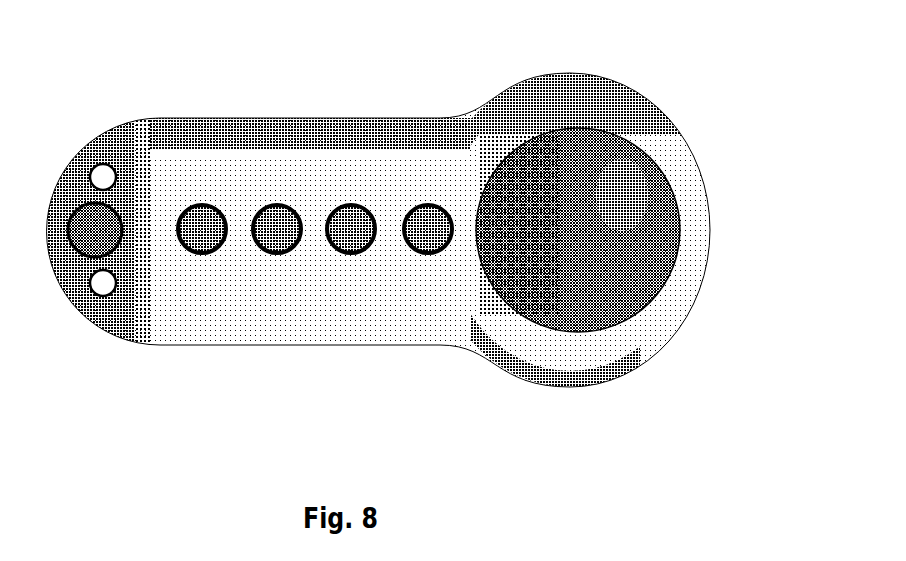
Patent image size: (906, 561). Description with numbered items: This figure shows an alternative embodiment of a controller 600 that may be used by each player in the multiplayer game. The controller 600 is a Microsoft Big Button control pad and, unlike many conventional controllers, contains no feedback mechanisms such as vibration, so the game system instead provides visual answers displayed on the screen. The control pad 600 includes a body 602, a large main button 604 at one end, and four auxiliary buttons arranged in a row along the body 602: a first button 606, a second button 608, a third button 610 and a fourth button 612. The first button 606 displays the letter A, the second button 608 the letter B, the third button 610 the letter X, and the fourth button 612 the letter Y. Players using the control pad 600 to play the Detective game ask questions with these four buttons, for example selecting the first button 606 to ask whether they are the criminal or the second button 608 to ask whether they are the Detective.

The controller 600 is at (433, 257).
The body 602 is at (183, 335).
The main button 604 is at (677, 230).
The first button 606 is at (423, 203).
The second button 608 is at (350, 207).
The third button 610 is at (262, 207).
The fourth button 612 is at (197, 227).